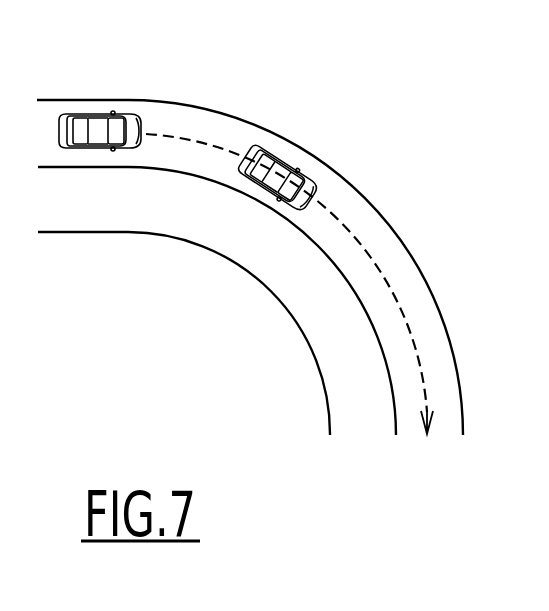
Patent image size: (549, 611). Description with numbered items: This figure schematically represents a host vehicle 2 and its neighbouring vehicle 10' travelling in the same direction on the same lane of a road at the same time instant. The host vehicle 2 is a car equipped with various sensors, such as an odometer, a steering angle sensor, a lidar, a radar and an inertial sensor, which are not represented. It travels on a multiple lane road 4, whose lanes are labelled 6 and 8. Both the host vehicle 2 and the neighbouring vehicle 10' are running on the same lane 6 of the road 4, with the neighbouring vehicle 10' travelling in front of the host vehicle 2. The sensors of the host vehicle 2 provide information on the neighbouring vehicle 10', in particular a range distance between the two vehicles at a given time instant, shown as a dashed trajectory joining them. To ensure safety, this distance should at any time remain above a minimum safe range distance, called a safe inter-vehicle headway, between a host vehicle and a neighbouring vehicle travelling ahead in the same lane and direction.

The host vehicle 2 is at (97, 117).
The multiple lane road 4 is at (293, 142).
The lane 6 is at (378, 239).
The lane 8 is at (318, 322).
The neighbouring vehicle 10' is at (319, 177).